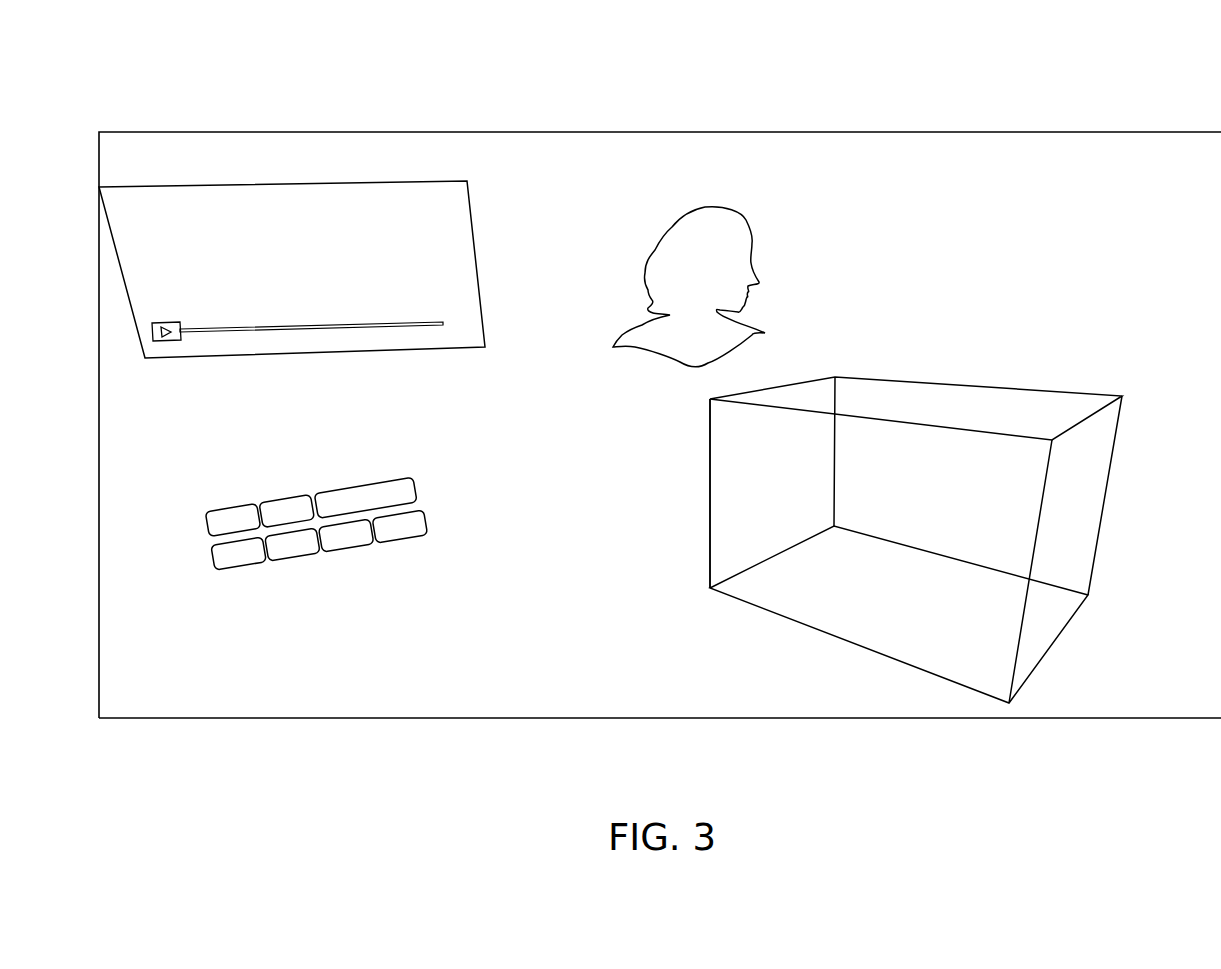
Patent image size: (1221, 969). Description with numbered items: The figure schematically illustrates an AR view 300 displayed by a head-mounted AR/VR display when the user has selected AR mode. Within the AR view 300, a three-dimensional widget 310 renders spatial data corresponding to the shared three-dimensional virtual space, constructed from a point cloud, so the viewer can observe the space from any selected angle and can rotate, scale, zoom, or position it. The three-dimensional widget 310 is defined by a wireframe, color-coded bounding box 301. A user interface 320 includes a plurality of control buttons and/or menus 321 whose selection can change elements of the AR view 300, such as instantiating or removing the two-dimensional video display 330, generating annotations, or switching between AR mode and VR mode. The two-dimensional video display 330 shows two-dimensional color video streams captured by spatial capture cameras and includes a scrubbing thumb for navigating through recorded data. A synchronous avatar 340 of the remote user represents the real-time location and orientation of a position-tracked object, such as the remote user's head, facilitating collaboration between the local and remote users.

The AR view 300 is at (305, 97).
The bounding box 301 is at (708, 548).
The 3D widget 310 is at (930, 358).
The user interface 320 is at (371, 496).
The control buttons and/or menus 321 is at (348, 555).
The 2D video display 330 is at (478, 268).
The synchronous avatar 340 is at (758, 205).